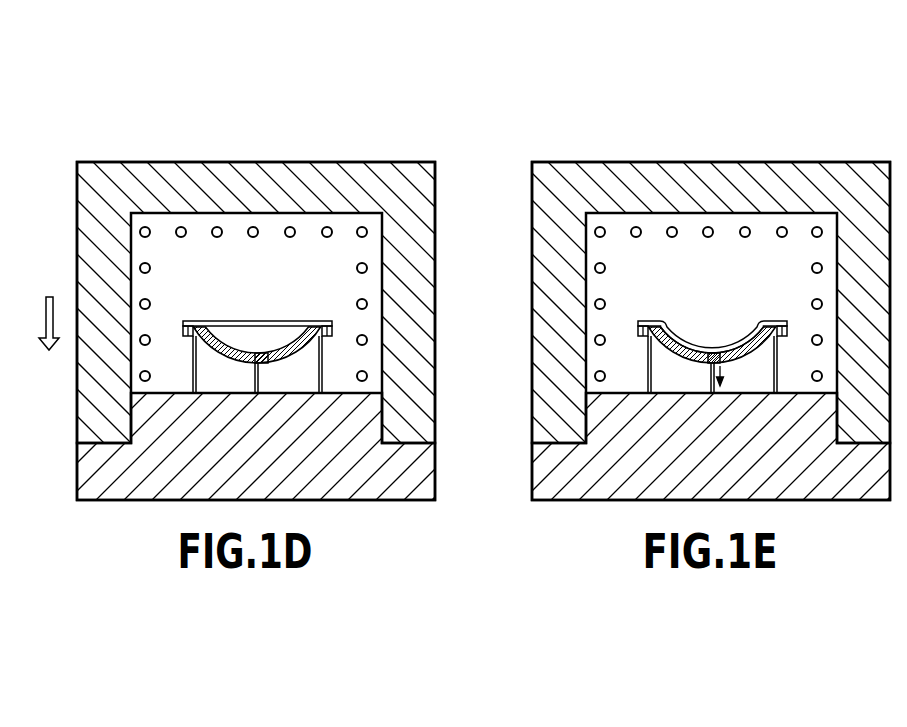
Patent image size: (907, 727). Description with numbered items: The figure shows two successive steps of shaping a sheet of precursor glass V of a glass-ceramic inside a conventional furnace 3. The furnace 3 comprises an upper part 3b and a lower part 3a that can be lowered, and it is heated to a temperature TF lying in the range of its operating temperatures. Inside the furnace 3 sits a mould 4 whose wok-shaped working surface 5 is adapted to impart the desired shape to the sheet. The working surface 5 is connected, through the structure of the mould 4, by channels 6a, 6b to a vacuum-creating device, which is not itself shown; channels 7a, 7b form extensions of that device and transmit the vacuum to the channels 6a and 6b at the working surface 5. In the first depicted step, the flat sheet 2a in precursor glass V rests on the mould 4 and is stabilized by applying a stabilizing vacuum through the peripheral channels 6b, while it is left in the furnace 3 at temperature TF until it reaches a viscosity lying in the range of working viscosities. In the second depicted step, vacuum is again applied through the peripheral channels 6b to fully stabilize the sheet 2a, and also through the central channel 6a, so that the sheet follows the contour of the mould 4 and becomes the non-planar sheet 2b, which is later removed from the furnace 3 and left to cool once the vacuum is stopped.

In FIG. 1D, the conventional furnace 3 is at (323, 130).
In FIG. 1E, the conventional furnace 3 is at (711, 283).
In FIG. 1D, the lower part 3a is at (127, 491).
In FIG. 1E, the lower part 3a is at (673, 467).
In FIG. 1D, the upper part 3b is at (181, 169).
In FIG. 1E, the upper part 3b is at (579, 284).
In FIG. 1D, the sheet 2a is at (255, 319).
In FIG. 1E, the non-planar sheet 2b is at (712, 315).
In FIG. 1D, the mould 4 is at (229, 370).
In FIG. 1E, the mould 4 is at (665, 400).
In FIG. 1D, the working surface 5 is at (278, 335).
In FIG. 1E, the working surface 5 is at (711, 328).
In FIG. 1D, the channel 6a is at (268, 362).
In FIG. 1E, the channel 6a is at (733, 371).
In FIG. 1D, the channels 6b is at (184, 331).
In FIG. 1E, the channels 6b is at (704, 307).
In FIG. 1D, the channel 7a is at (252, 381).
In FIG. 1E, the channel 7a is at (707, 399).
In FIG. 1D, the channels 7b is at (184, 347).
In FIG. 1E, the channels 7b is at (708, 364).
In FIG. 1D, the precursor glass V is at (220, 309).
In FIG. 1E, the precursor glass V is at (667, 288).
In FIG. 1E, the temperature TF is at (709, 261).